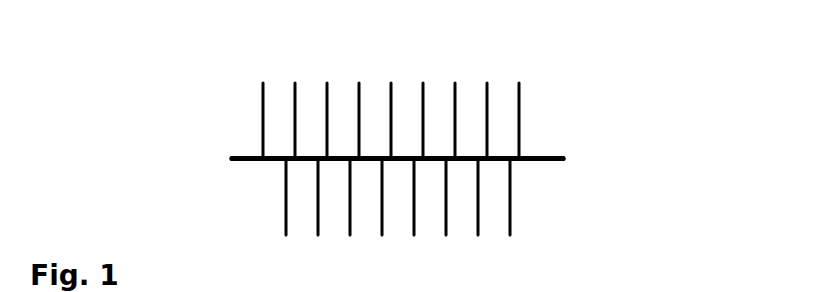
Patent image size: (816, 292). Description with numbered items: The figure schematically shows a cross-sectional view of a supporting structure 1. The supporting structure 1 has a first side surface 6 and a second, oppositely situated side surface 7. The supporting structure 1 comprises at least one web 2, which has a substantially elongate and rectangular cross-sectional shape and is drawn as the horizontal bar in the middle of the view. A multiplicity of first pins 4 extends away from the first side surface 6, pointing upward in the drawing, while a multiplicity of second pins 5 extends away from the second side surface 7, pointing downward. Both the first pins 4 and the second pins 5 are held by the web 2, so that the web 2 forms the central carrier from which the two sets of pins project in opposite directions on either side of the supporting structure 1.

The supporting structure 1 is at (435, 133).
The web 2 is at (364, 105).
The first pins 4 is at (392, 83).
The second pins 5 is at (409, 208).
The first side surface 6 is at (581, 111).
The second side surface 7 is at (198, 186).